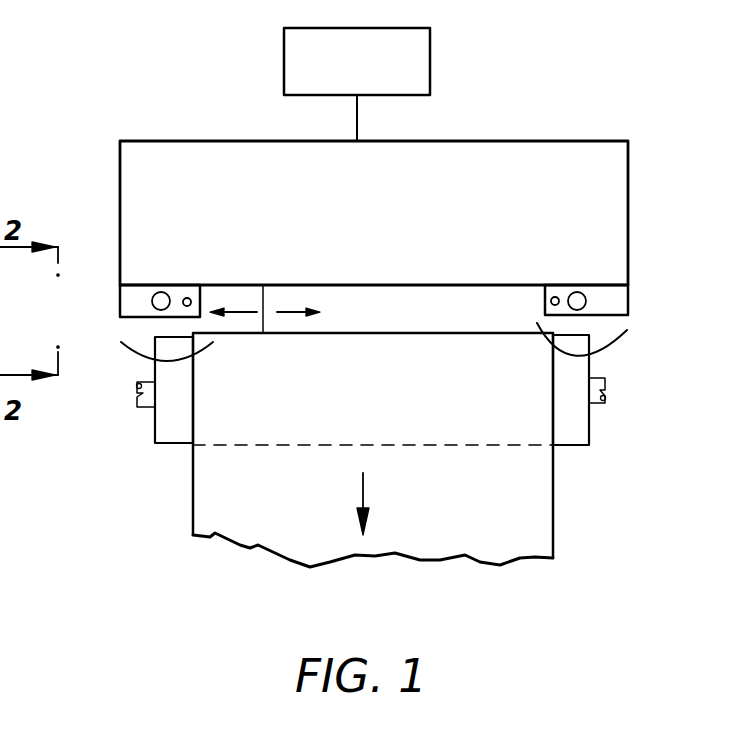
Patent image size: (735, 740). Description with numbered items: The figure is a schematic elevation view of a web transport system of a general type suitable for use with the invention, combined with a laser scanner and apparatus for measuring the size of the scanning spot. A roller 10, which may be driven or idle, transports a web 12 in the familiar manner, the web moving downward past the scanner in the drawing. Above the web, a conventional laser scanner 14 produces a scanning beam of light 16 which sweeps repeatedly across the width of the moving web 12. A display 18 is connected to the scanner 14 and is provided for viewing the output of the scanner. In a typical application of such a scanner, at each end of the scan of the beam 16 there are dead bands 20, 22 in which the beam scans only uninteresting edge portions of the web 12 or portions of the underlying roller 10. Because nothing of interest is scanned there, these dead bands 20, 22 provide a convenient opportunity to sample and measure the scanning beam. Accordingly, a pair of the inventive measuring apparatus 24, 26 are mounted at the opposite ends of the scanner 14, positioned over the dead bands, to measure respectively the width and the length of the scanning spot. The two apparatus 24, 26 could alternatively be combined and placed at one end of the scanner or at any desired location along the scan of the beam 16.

The roller 10 is at (578, 433).
The web 12 is at (530, 527).
The laser scanner 14 is at (618, 167).
The scanning beam of light 16 is at (266, 290).
The display 18 is at (425, 45).
The dead band 20 is at (182, 364).
The dead band 22 is at (556, 363).
The spot measuring apparatus 24 is at (120, 298).
The spot measuring apparatus 26 is at (620, 302).